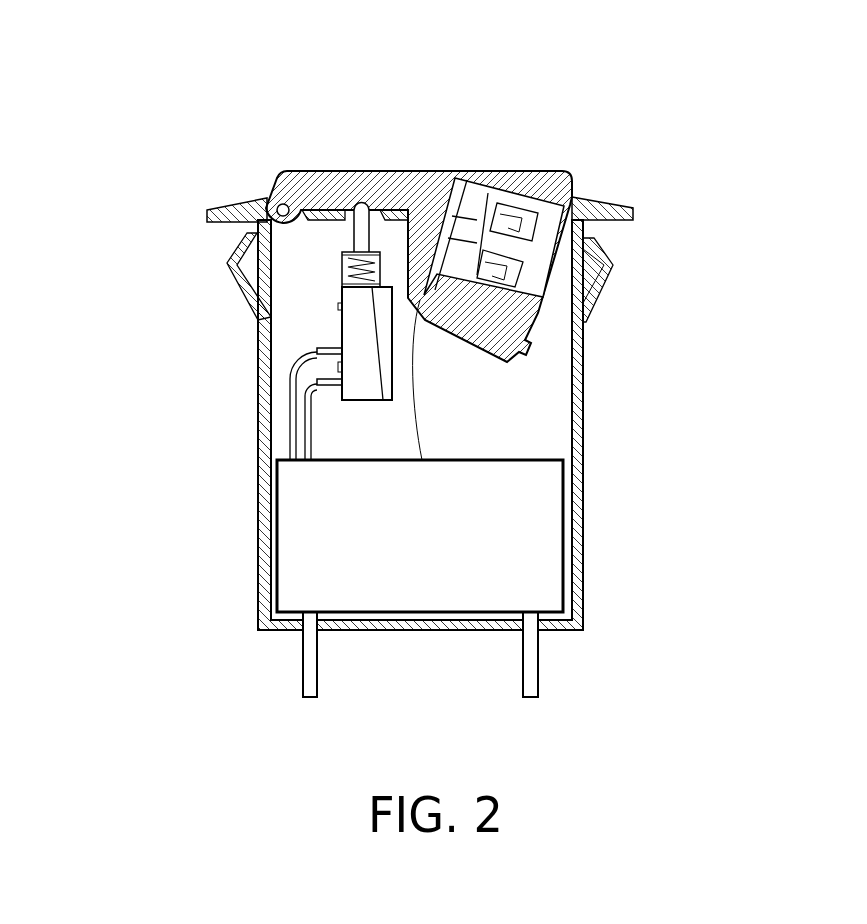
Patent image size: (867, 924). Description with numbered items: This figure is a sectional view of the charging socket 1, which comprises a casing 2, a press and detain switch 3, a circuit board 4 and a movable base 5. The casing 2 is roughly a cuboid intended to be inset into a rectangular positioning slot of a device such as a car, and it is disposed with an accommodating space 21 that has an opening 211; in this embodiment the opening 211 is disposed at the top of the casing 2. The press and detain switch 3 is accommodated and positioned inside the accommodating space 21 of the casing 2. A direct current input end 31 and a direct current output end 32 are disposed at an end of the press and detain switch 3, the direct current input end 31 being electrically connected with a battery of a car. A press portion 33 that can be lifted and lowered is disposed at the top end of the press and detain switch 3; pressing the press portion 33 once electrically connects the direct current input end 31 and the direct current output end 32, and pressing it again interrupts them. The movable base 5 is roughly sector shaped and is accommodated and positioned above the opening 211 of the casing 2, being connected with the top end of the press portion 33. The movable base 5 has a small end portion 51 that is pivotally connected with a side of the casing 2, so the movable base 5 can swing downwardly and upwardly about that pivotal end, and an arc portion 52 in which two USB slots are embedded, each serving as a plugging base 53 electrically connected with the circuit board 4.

The charging socket 1 is at (571, 97).
The casing 2 is at (580, 373).
The accommodating space 21 is at (530, 420).
The opening 211 is at (307, 225).
The press and detain switch 3 is at (347, 329).
The direct current input end 31 is at (322, 387).
The direct current output end 32 is at (327, 352).
The press portion 33 is at (355, 205).
The circuit board 4 is at (431, 553).
The movable base 5 is at (417, 171).
The small end portion 51 is at (283, 185).
The arc portion 52 is at (572, 178).
The plugging base 53 is at (543, 255).